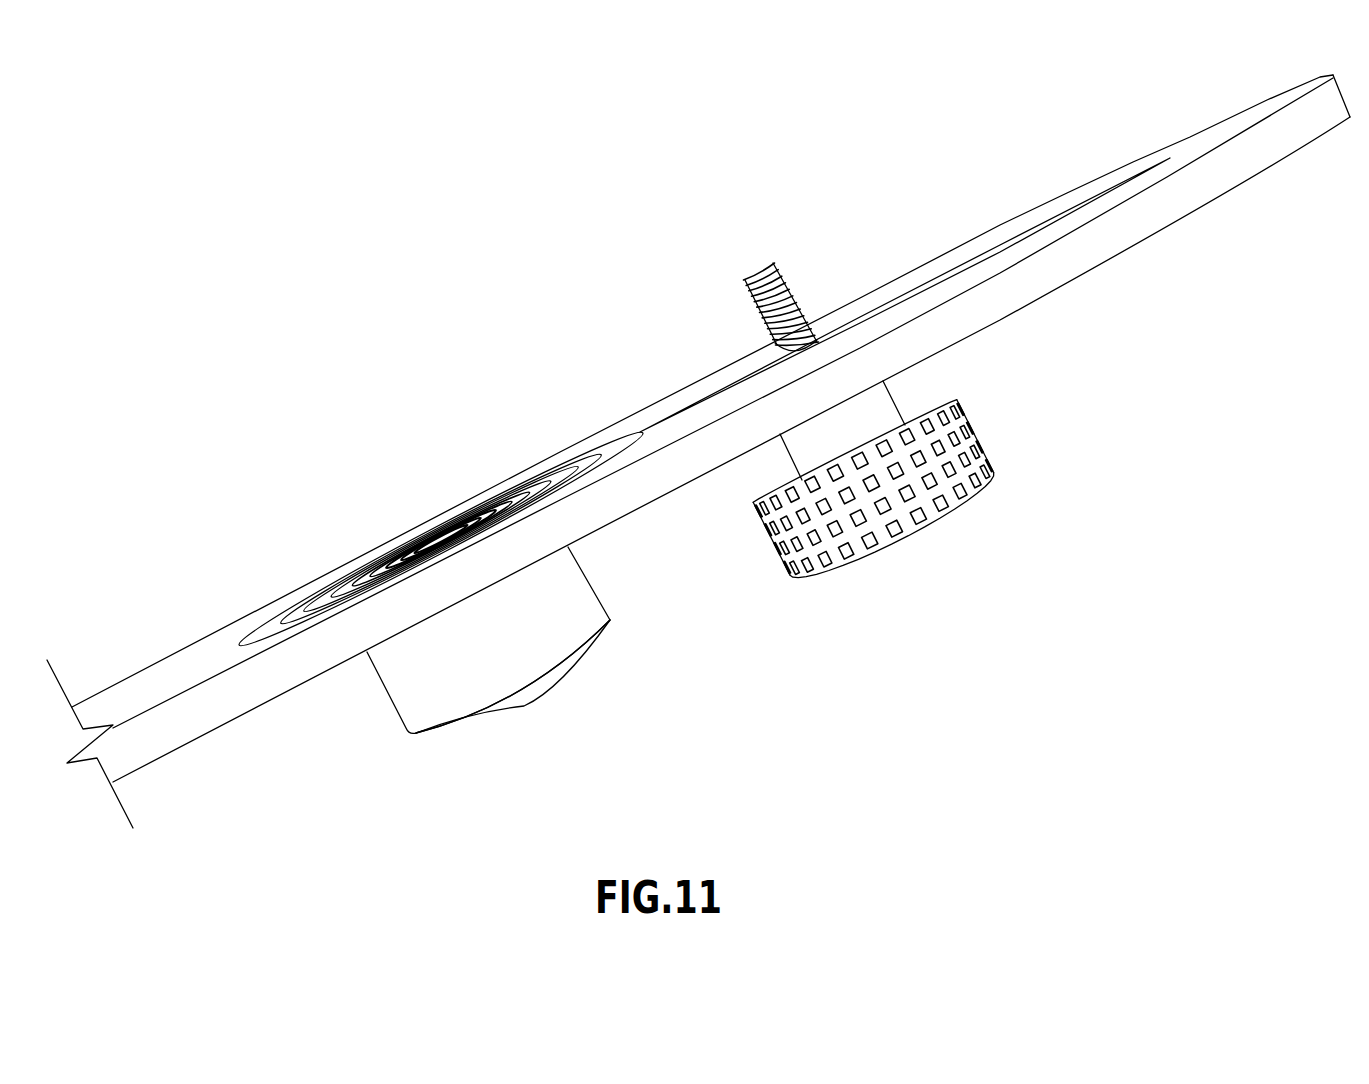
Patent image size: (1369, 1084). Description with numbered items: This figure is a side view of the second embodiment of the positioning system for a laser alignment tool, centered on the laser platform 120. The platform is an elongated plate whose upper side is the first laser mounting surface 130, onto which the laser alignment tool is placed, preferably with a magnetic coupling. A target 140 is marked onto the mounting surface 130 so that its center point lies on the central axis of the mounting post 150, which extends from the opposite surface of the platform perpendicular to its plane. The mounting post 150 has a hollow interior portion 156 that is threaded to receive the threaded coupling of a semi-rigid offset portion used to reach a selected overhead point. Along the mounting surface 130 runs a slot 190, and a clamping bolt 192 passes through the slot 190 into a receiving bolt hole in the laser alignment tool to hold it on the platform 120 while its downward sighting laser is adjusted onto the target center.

The laser platform 120 is at (487, 333).
The first laser mounting surface 130 is at (155, 687).
The target 140 is at (423, 548).
The mounting post 150 is at (398, 714).
The hollow interior portion 156 is at (562, 665).
The slot 190 is at (885, 302).
The clamping bolt 192 is at (1002, 478).